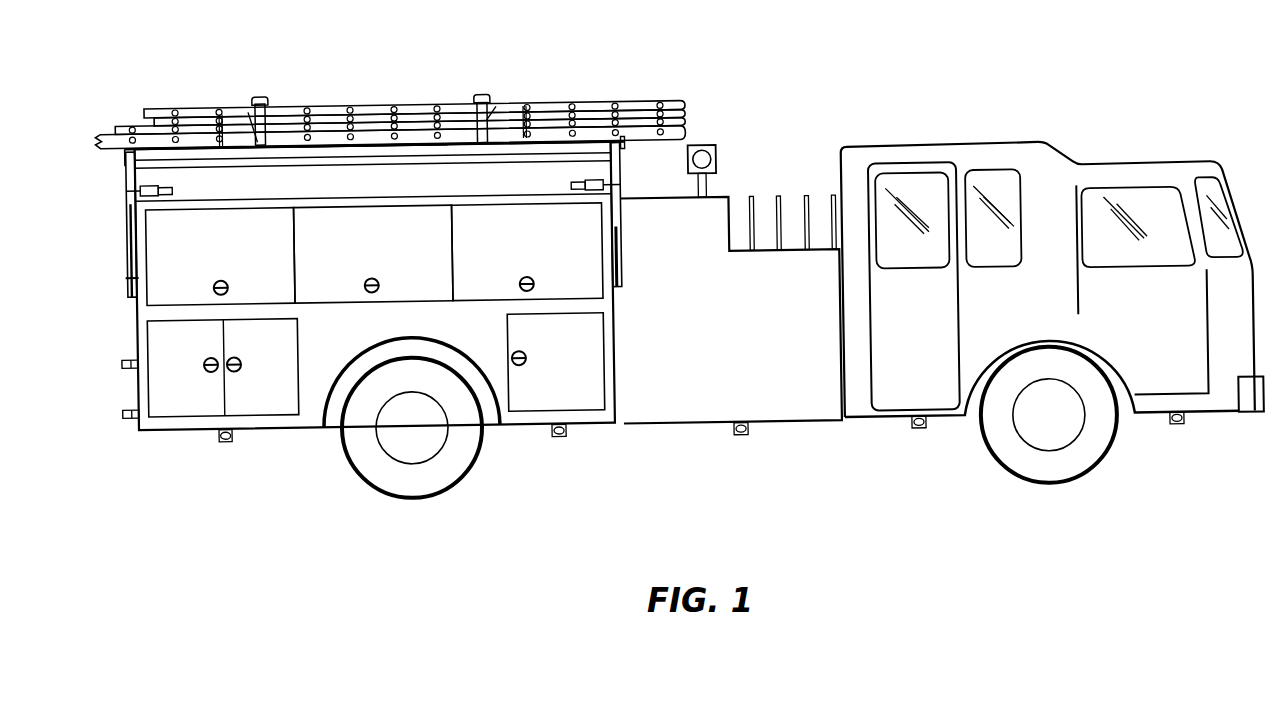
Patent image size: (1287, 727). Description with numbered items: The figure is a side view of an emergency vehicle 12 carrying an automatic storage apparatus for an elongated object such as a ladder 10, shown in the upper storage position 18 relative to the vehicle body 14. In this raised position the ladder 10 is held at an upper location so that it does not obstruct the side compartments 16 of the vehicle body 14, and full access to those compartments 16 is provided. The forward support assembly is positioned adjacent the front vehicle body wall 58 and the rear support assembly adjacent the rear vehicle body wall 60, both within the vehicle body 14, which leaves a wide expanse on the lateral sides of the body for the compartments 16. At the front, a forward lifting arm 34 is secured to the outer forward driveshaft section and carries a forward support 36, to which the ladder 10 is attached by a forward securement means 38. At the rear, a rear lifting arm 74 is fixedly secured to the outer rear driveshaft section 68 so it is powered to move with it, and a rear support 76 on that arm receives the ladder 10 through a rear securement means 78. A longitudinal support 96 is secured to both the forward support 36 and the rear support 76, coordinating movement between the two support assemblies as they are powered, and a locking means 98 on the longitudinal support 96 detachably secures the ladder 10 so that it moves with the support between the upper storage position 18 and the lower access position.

The ladder 10 is at (603, 100).
The emergency vehicle 12 is at (768, 353).
The vehicle body 14 is at (462, 338).
The side compartments 16 is at (208, 256).
The upper storage position 18 is at (682, 108).
The forward lifting arm means 34 is at (623, 191).
The forward support means 36 is at (628, 150).
The forward securement means 38 is at (479, 120).
The front vehicle body wall 58 is at (625, 261).
The rear vehicle body wall 60 is at (137, 347).
The outer rear driveshaft section 68 is at (127, 277).
The rear lifting arm 74 is at (128, 245).
The rear support means 76 is at (127, 162).
The rear securement means 78 is at (270, 115).
The longitudinal support means 96 is at (372, 148).
The locking means 98 is at (264, 98).